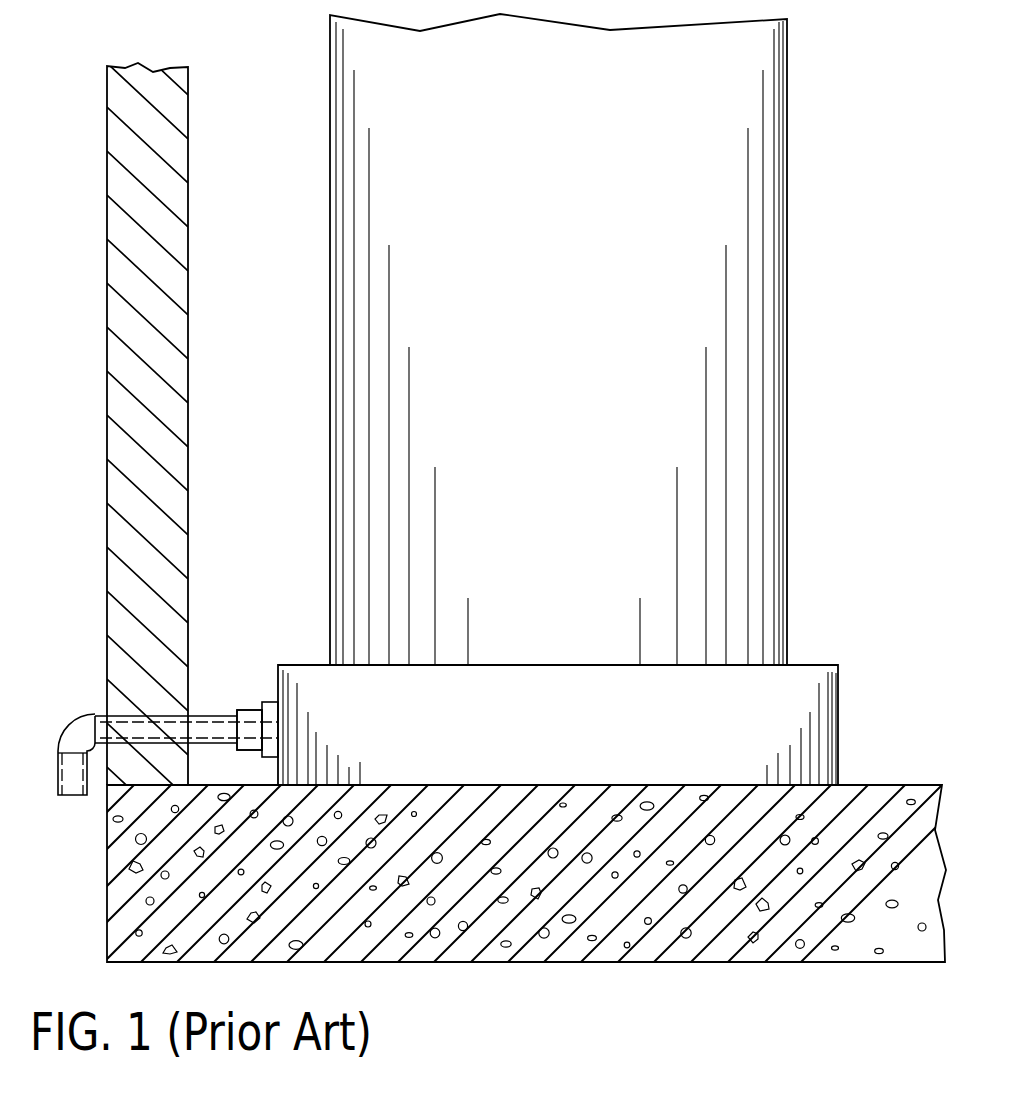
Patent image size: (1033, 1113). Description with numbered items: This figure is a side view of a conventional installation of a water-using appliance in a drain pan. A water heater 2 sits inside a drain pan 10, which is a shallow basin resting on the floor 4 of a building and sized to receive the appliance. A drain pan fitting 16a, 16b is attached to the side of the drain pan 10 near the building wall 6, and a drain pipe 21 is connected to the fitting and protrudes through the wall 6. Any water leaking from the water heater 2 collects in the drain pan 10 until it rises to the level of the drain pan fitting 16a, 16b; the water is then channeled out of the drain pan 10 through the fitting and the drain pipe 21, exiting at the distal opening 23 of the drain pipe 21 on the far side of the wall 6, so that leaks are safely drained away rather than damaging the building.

The water heater 2 is at (765, 338).
The floor 4 is at (828, 948).
The wall 6 is at (113, 353).
The drain pan 10 is at (825, 723).
The drain pan fitting 16a is at (272, 706).
The drain pan fitting 16b is at (249, 730).
The drain pipe 21 is at (77, 720).
The distal opening 23 is at (70, 796).